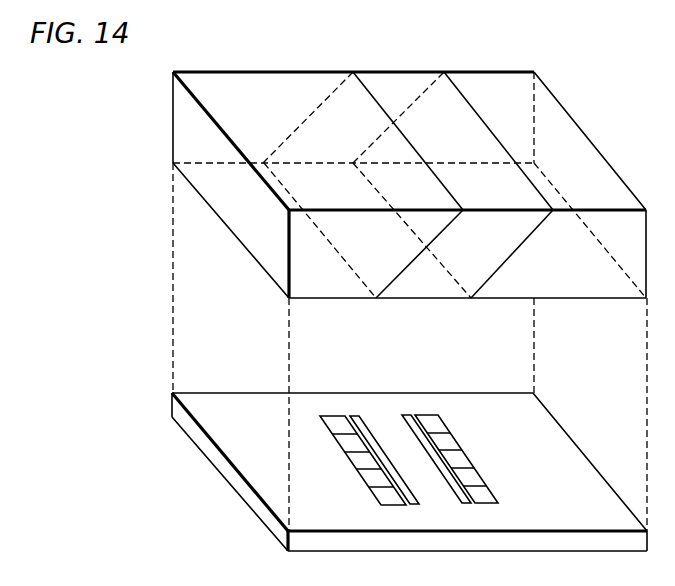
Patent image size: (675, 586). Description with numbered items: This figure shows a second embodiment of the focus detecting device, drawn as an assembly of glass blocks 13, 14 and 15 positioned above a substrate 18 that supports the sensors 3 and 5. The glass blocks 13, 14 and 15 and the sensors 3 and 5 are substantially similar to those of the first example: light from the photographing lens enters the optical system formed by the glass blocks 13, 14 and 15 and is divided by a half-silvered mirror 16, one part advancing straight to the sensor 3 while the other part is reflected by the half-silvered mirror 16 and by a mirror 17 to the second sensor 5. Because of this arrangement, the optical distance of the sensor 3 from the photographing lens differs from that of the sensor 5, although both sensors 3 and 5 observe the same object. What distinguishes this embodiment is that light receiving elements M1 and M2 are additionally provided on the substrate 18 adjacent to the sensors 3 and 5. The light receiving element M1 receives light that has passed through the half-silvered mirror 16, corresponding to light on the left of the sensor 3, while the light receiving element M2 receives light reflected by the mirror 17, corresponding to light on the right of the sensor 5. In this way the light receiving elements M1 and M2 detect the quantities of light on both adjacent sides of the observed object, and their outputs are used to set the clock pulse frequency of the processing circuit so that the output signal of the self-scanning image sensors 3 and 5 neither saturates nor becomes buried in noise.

The glass block 15 is at (409, 185).
The glass block 13 is at (363, 185).
The glass block 14 is at (453, 185).
The mirror 17 is at (405, 268).
The half-silvered mirror 16 is at (521, 247).
The substrate 18 is at (409, 472).
The sensor 5 is at (369, 508).
The light receiving element M2 is at (368, 436).
The light receiving element M1 is at (432, 452).
The sensor 3 is at (443, 407).